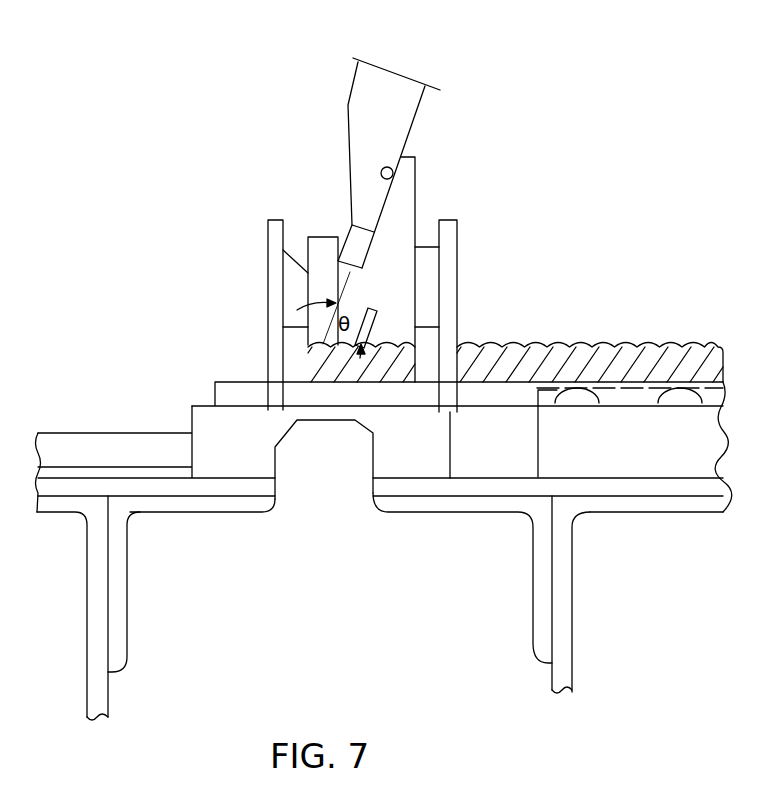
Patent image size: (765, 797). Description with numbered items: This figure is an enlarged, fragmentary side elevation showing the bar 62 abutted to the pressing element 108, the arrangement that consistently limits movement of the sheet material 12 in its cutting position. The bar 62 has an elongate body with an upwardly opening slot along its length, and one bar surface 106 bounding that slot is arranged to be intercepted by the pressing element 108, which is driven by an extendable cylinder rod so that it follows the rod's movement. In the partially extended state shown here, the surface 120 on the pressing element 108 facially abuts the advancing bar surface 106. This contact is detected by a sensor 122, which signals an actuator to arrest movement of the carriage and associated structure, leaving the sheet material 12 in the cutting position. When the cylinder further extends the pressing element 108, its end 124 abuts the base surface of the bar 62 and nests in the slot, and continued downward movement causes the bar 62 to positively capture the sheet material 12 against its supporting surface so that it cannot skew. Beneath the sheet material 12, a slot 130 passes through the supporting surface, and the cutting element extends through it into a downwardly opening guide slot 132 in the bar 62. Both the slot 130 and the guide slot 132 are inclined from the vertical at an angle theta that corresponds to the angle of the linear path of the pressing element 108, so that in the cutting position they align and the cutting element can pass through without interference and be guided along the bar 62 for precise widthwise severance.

The sheet material 12 is at (590, 353).
The bar 62 is at (406, 291).
The bar surface 106 is at (380, 217).
The pressing element 108 is at (377, 82).
The surface 120 is at (424, 97).
The sensor 122 is at (392, 167).
The end 124 is at (342, 256).
The slot 130 is at (340, 420).
The guide slot 132 is at (375, 311).